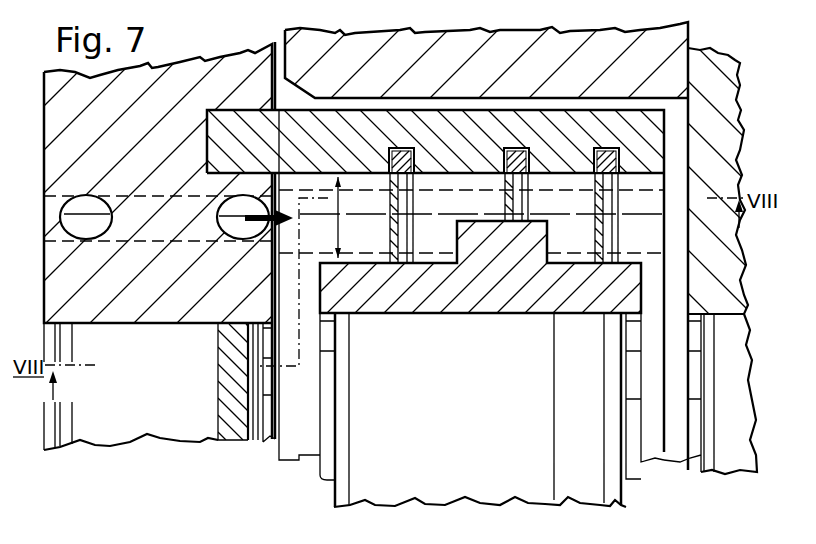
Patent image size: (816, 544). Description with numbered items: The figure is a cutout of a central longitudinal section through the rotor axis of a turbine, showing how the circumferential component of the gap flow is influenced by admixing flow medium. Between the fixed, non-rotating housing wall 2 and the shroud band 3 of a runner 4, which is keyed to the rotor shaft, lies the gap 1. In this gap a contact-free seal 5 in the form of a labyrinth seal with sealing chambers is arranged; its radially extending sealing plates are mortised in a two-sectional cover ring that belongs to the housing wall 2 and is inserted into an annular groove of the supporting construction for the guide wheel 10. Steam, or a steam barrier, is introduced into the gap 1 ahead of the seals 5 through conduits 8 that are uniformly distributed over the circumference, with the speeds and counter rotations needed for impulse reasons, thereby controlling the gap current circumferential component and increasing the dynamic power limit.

The gap 1 is at (340, 228).
The housing wall 2 is at (641, 174).
The shroud band 3 is at (514, 262).
The runner 4 is at (513, 413).
The contact-free seal 5 is at (389, 198).
The conduits 8 is at (97, 196).
The guide wheel 10 is at (163, 409).